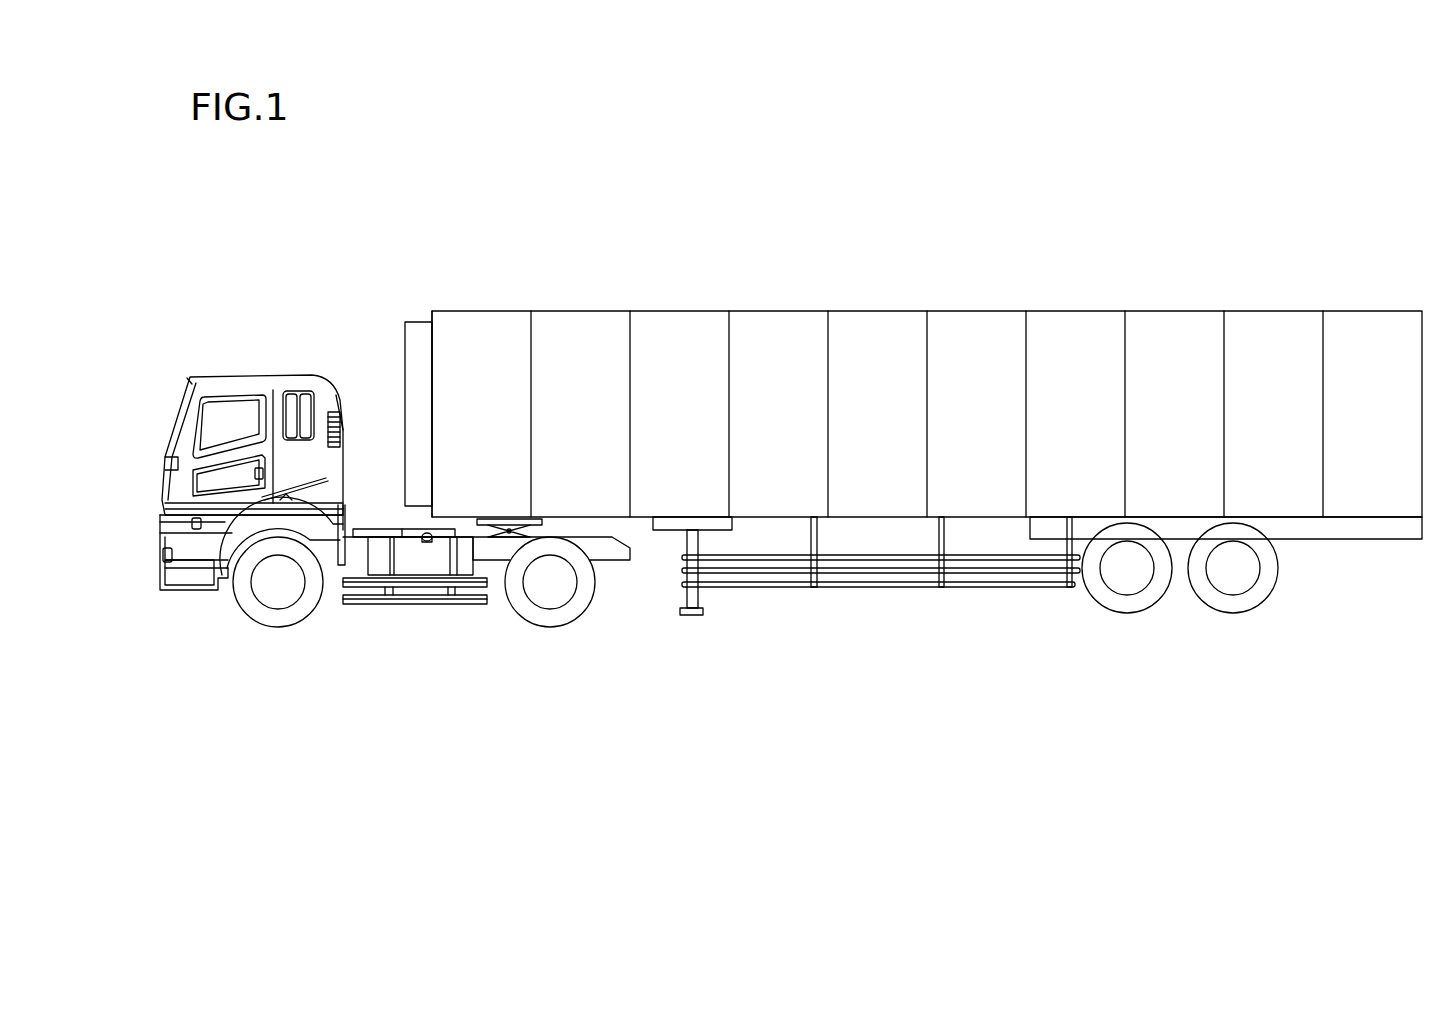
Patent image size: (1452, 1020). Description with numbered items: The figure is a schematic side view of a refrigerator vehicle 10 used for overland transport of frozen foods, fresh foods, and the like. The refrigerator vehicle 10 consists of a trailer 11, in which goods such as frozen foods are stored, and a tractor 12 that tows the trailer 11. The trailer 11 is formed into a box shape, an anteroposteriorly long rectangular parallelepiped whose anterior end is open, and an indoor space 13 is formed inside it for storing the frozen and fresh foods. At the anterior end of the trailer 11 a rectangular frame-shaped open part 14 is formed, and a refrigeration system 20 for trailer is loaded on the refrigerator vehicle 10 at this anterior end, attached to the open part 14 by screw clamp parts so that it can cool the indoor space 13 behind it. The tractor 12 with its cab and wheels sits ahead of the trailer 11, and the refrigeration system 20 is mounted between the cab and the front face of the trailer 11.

The refrigerator vehicle 10 is at (298, 232).
The trailer 11 is at (870, 311).
The tractor 12 is at (247, 374).
The indoor space 13 is at (772, 350).
The open part 14 is at (432, 347).
The refrigeration system for trailer 20 is at (405, 345).